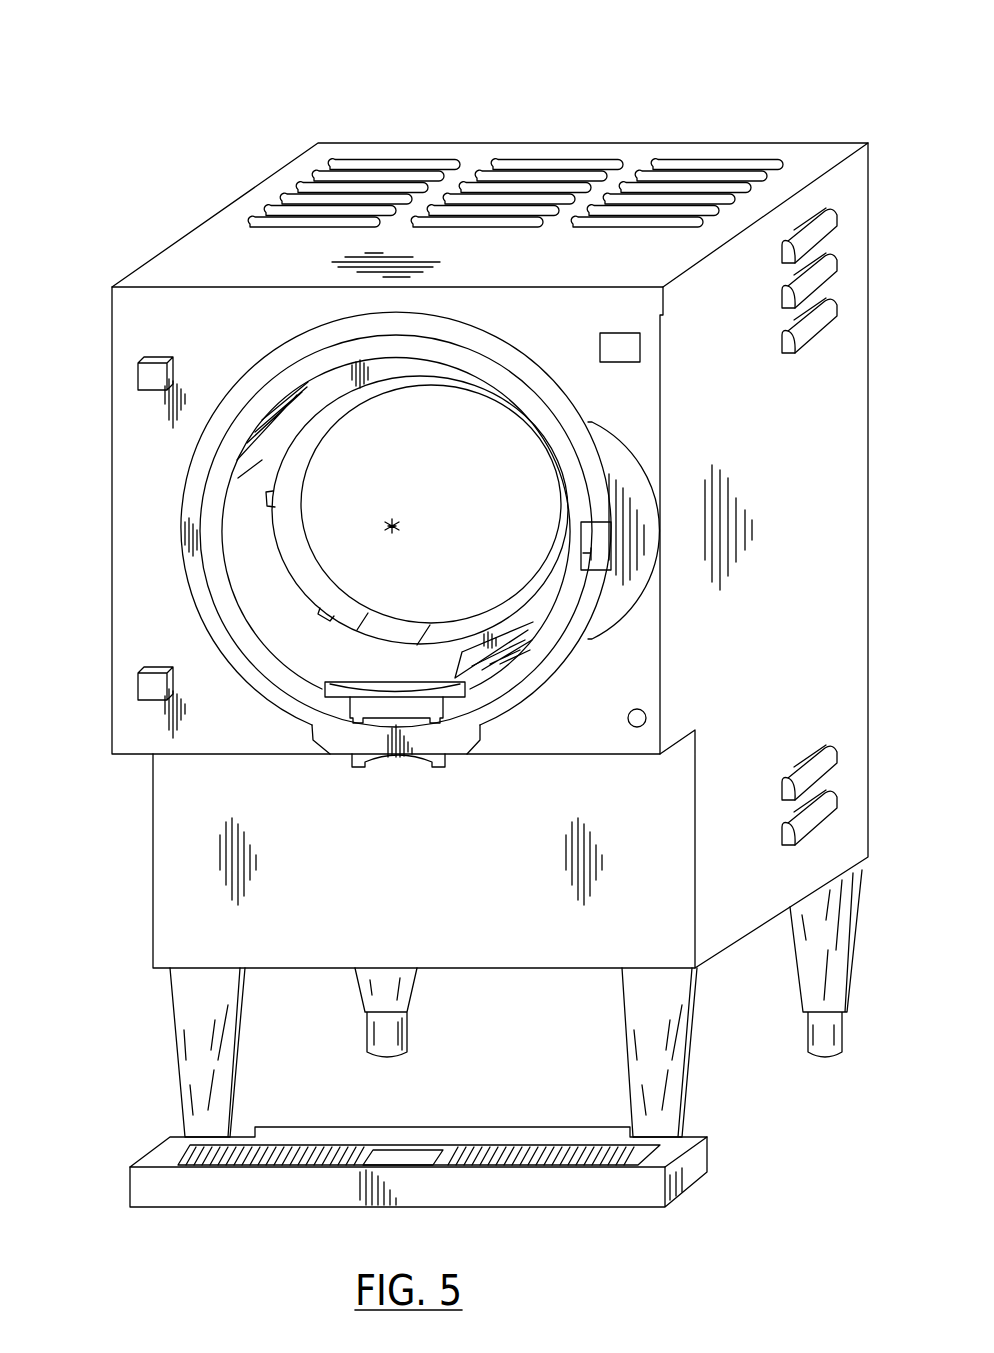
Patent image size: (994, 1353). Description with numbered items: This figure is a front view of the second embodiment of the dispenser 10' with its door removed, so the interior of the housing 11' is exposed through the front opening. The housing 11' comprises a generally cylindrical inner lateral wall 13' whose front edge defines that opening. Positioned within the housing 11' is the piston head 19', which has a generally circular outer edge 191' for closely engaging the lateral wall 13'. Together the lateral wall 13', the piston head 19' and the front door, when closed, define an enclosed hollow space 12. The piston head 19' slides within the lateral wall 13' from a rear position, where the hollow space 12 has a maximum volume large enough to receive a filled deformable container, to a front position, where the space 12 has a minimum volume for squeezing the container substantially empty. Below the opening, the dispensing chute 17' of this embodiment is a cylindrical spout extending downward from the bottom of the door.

The dispenser 10' is at (455, 603).
The housing 11' is at (455, 675).
The hollow space 12 is at (322, 396).
The inner lateral wall 13' is at (353, 533).
The dispensing chute 17' is at (398, 783).
The piston head 19' is at (431, 504).
The circular outer edge 191' is at (417, 510).